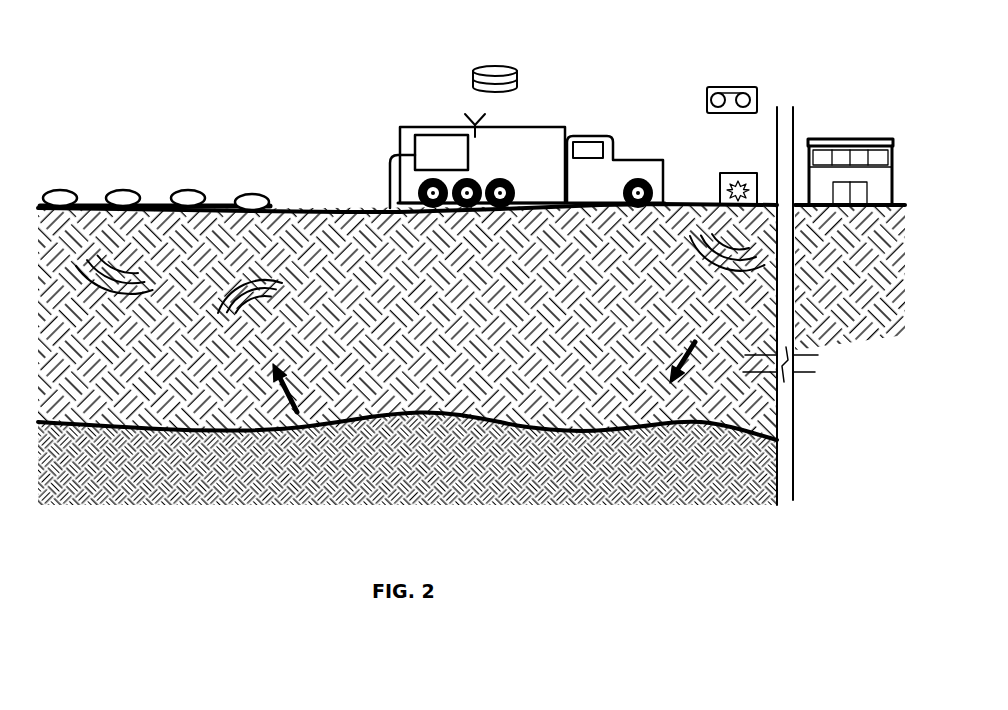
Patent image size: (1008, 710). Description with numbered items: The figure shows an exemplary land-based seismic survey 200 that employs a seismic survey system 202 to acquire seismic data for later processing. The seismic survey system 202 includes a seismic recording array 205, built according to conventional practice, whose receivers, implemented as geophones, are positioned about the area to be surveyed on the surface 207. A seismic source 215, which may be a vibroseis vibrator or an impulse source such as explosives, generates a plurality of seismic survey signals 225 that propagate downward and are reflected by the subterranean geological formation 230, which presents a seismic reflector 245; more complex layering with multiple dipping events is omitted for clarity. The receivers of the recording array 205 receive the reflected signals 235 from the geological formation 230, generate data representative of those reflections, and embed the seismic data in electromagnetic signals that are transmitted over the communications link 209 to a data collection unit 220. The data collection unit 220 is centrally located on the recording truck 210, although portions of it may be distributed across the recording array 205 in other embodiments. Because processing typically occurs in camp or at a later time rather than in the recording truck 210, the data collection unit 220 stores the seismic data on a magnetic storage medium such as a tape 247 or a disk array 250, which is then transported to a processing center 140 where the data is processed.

The land-based seismic survey 200 is at (118, 30).
The seismic survey system 202 is at (290, 66).
The seismic recording array 205 is at (157, 153).
The surface 207 is at (394, 210).
The communications link 209 is at (392, 155).
The recording truck 210 is at (499, 166).
The seismic source 215 is at (728, 173).
The data collection unit 220 is at (423, 135).
The seismic survey signals 225 is at (678, 274).
The geological formation 230 is at (477, 368).
The reflected signals 235 is at (285, 329).
The seismic reflector 245 is at (522, 420).
The tape 247 is at (705, 93).
The disk array 250 is at (474, 76).
The processing center 140 is at (857, 138).